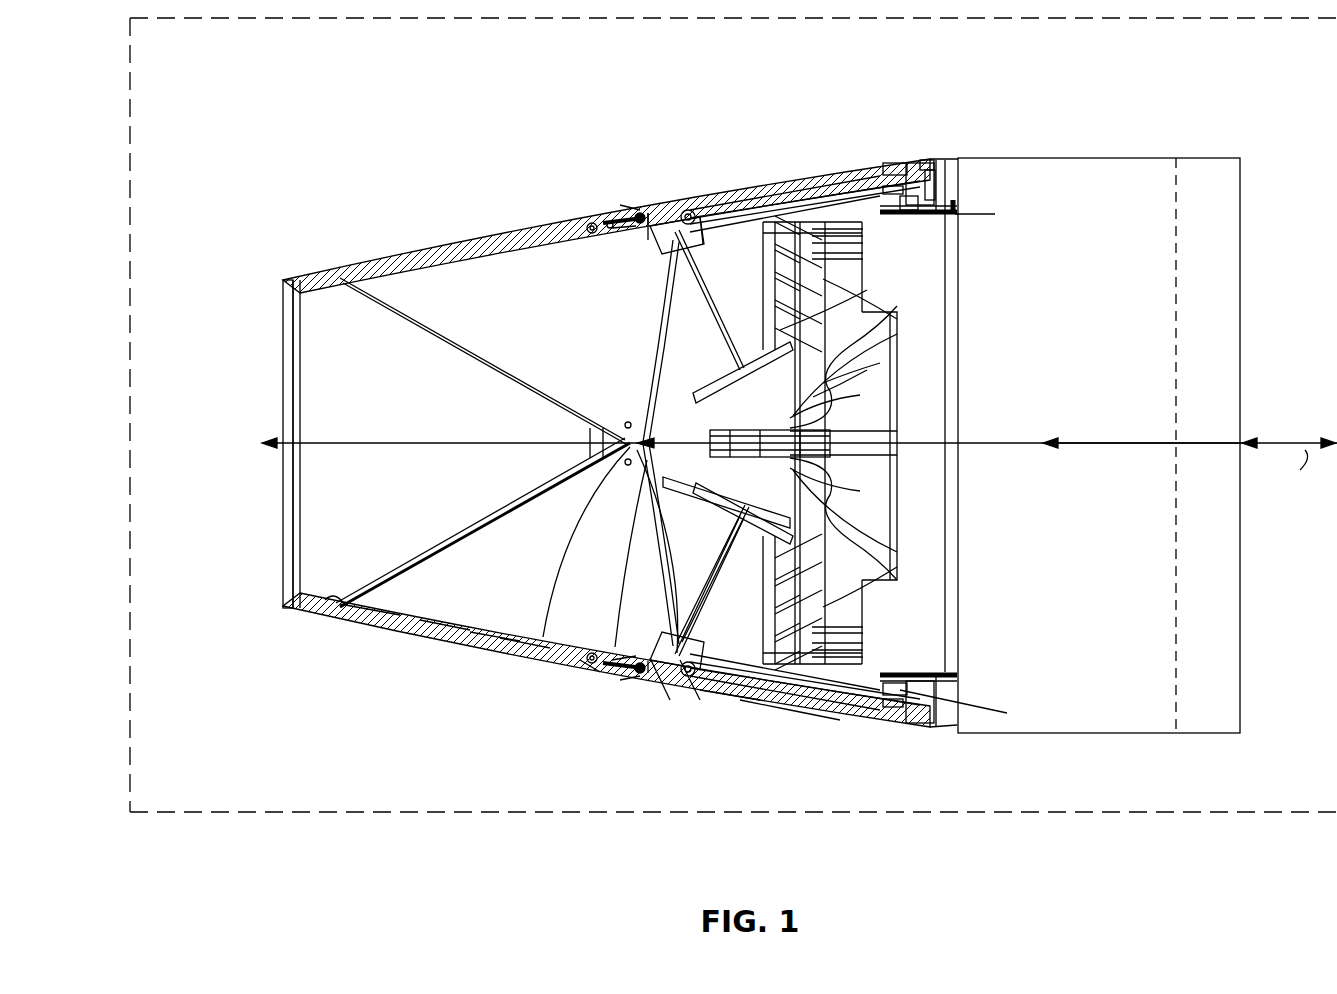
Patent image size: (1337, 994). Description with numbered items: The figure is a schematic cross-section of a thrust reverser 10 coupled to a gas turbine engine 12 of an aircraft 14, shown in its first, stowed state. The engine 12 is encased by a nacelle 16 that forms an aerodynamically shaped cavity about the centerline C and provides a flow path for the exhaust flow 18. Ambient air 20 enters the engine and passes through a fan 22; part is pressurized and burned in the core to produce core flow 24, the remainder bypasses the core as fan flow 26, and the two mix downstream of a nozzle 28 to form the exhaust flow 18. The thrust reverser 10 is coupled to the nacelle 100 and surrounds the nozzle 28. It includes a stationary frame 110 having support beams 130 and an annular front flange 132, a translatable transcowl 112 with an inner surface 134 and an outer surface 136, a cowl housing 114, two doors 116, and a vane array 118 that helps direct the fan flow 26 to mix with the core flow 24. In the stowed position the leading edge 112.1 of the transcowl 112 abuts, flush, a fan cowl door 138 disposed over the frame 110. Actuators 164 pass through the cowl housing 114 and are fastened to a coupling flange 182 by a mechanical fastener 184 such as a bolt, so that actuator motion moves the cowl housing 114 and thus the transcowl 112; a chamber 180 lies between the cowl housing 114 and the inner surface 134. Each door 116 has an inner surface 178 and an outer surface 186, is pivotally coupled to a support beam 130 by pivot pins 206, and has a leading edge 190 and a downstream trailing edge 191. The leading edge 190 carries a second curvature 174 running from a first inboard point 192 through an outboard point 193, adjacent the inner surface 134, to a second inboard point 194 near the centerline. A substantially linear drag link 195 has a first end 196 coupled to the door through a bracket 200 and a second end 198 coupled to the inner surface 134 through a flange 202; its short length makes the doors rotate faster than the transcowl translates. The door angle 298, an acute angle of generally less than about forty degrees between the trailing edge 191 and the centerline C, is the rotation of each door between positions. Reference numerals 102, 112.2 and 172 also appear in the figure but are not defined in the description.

The thrust reverser 10 is at (823, 97).
The gas turbine engine 12 is at (1099, 386).
The aircraft 14 is at (1222, 813).
The nacelle 16 is at (1090, 165).
The exhaust flow 18 is at (716, 500).
The ambient air 20 is at (1279, 441).
The fan 22 is at (1200, 275).
The core flow 24 is at (1075, 441).
The fan flow 26 is at (955, 203).
The nozzle 28 is at (870, 375).
The nacelle 100 is at (950, 720).
The actuator system 102 is at (595, 668).
The stationary frame 110 is at (805, 735).
The transcowl 112 is at (741, 176).
The leading edge of transcowl 112.1 is at (885, 162).
The forward end of outer shell 112.2 is at (282, 284).
The cowl housing 114 is at (741, 712).
The doors 116 is at (374, 634).
The vane array 118 is at (837, 203).
The support beams 130 is at (840, 410).
The annular front flange 132 is at (933, 643).
The inner surface of transcowl 134 is at (333, 617).
The outer surface of transcowl 136 is at (446, 643).
The fan cowl door 138 is at (913, 158).
The actuators 164 is at (783, 184).
The vane 172 is at (790, 330).
The second curvature 174 is at (750, 595).
The inner surface of door 178 is at (522, 617).
The chamber 180 is at (764, 722).
The coupling flange 182 is at (687, 683).
The mechanical fastener 184 is at (656, 701).
The outer surface of door 186 is at (493, 645).
The leading edge of door 190 is at (685, 265).
The trailing edge of door 191 is at (350, 293).
The first inboard point 192 is at (630, 421).
The outboard point 193 is at (718, 641).
The second inboard point 194 is at (840, 380).
The drag link 195 is at (625, 198).
The first end of drag link 196 is at (632, 226).
The second end of drag link 198 is at (599, 227).
The bracket 200 is at (572, 228).
The flange 202 is at (583, 221).
The pivot pins 206 is at (602, 461).
The door angle 298 is at (548, 410).